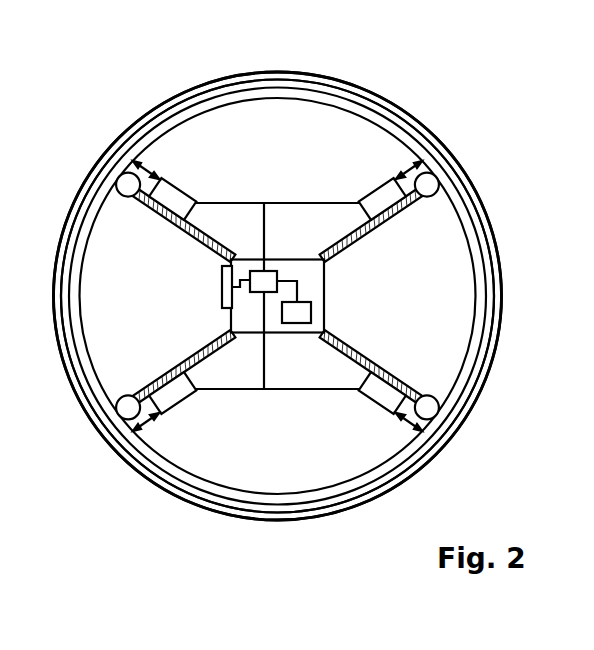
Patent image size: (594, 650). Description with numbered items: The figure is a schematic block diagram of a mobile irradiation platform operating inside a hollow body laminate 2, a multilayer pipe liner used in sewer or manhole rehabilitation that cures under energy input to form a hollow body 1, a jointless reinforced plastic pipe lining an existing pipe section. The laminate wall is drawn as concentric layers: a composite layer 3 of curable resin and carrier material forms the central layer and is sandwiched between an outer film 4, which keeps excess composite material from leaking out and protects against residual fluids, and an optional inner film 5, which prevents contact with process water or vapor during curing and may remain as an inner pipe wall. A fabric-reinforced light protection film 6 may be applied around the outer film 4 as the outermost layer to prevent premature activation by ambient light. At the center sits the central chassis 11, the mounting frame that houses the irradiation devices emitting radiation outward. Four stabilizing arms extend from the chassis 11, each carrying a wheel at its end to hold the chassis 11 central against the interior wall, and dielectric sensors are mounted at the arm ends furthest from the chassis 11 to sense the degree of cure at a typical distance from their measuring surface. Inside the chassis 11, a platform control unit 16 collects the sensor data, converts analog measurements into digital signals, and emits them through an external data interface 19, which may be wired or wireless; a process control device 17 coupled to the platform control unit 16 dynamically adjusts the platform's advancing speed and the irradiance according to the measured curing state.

The hollow body 1 is at (441, 128).
The hollow body laminate 2 is at (278, 296).
The composite layer 3 is at (488, 265).
The outer film 4 is at (497, 308).
The inner film 5 is at (475, 337).
The light protection film 6 is at (277, 296).
The central chassis 11 is at (284, 259).
The platform control unit 16 is at (277, 281).
The process control device 17 is at (311, 314).
The external data interface 19 is at (222, 299).